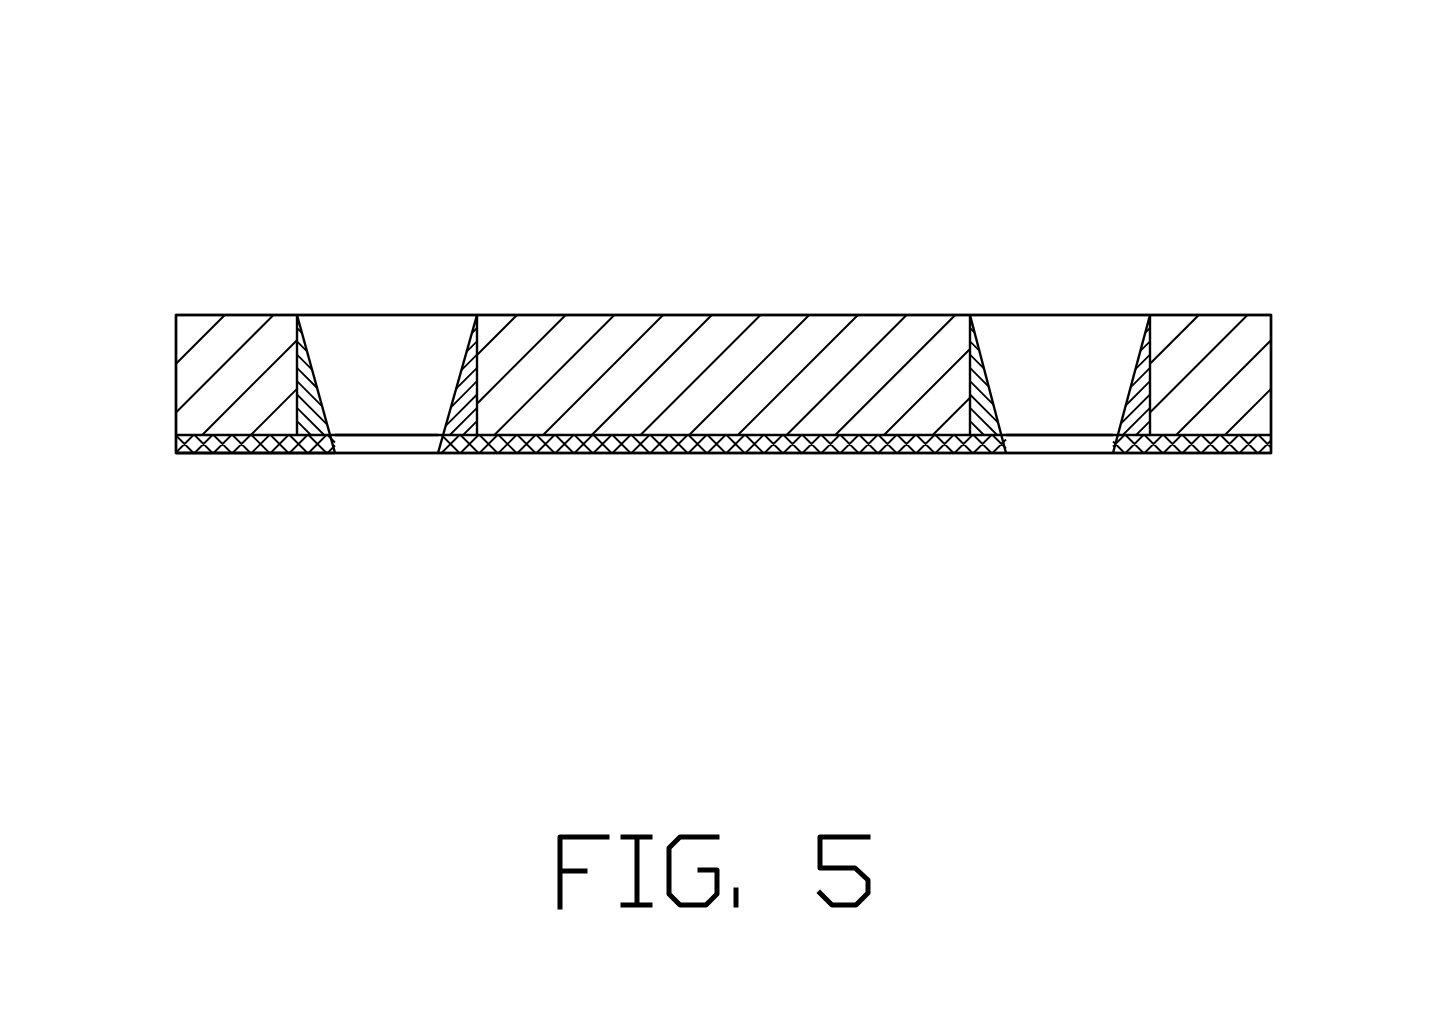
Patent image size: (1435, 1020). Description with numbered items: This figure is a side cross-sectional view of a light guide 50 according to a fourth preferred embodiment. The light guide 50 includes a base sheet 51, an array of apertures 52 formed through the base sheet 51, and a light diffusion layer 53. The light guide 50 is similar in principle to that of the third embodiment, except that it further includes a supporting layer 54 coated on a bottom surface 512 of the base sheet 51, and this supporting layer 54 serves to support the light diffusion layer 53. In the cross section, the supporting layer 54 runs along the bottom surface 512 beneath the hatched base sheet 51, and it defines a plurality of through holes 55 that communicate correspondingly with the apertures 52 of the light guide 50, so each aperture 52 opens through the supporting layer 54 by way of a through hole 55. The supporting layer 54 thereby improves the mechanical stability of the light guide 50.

The light guide 50 is at (767, 94).
The base sheet 51 is at (1245, 395).
The apertures 52 is at (1048, 368).
The light diffusion layer 53 is at (987, 372).
The supporting layer 54 is at (1270, 446).
The through holes 55 is at (1058, 442).
The bottom surface 512 is at (247, 460).